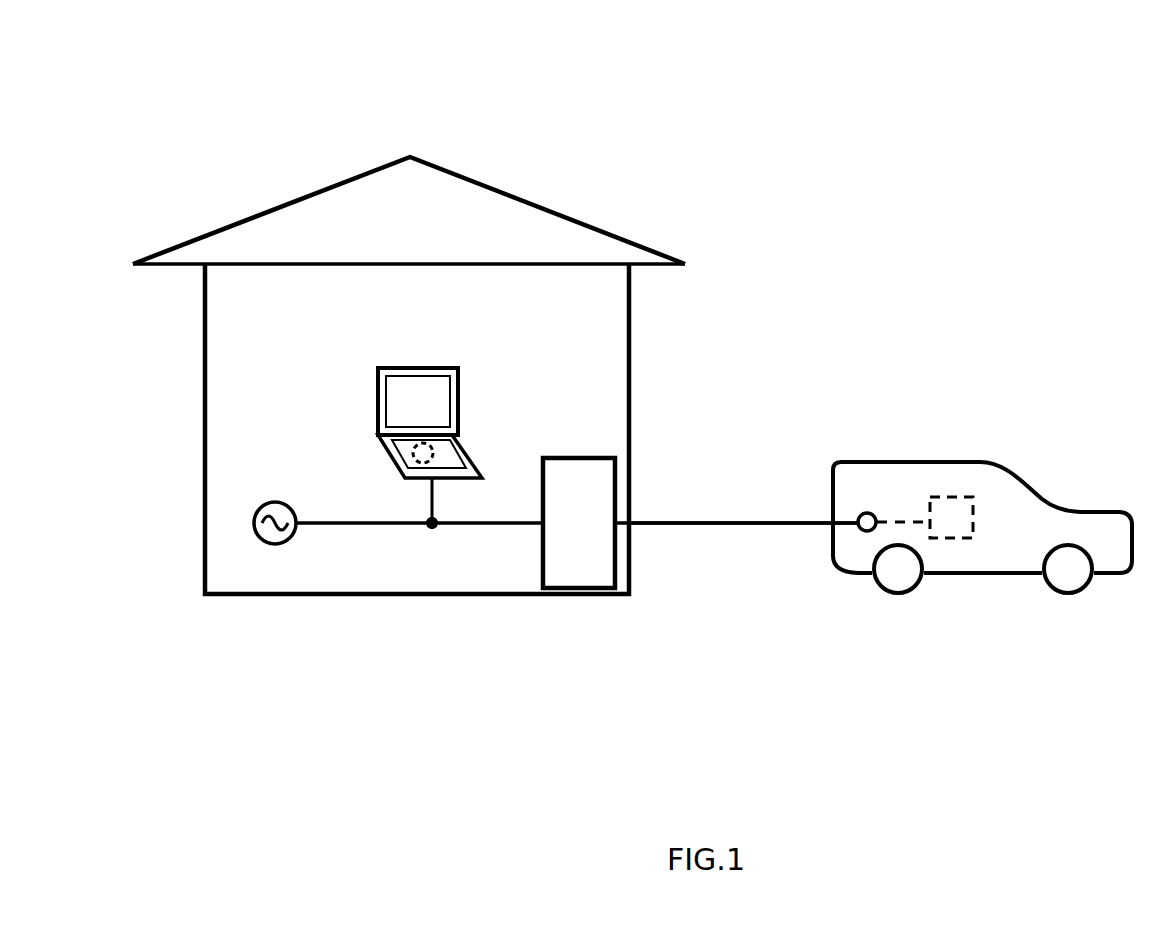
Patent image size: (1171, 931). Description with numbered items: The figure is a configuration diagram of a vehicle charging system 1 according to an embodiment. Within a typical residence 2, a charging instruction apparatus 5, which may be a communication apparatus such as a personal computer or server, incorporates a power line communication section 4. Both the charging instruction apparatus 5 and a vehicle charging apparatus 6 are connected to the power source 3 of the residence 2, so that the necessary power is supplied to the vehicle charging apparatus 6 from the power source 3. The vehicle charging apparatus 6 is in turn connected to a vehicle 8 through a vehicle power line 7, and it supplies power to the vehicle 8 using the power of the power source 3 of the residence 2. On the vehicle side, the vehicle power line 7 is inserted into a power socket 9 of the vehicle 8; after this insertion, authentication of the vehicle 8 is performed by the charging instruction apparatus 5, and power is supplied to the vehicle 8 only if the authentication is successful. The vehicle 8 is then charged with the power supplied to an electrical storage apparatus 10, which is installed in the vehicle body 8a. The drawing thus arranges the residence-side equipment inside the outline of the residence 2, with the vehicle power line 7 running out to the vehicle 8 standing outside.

The vehicle charging system 1 is at (790, 187).
The residence 2 is at (265, 212).
The power source 3 is at (270, 545).
The power line communication section 4 is at (402, 456).
The charging instruction apparatus 5 is at (378, 368).
The vehicle charging apparatus 6 is at (582, 458).
The vehicle power line 7 is at (736, 525).
The vehicle 8 is at (989, 518).
The vehicle body 8a is at (983, 575).
The power socket 9 is at (862, 512).
The electrical storage apparatus 10 is at (960, 497).